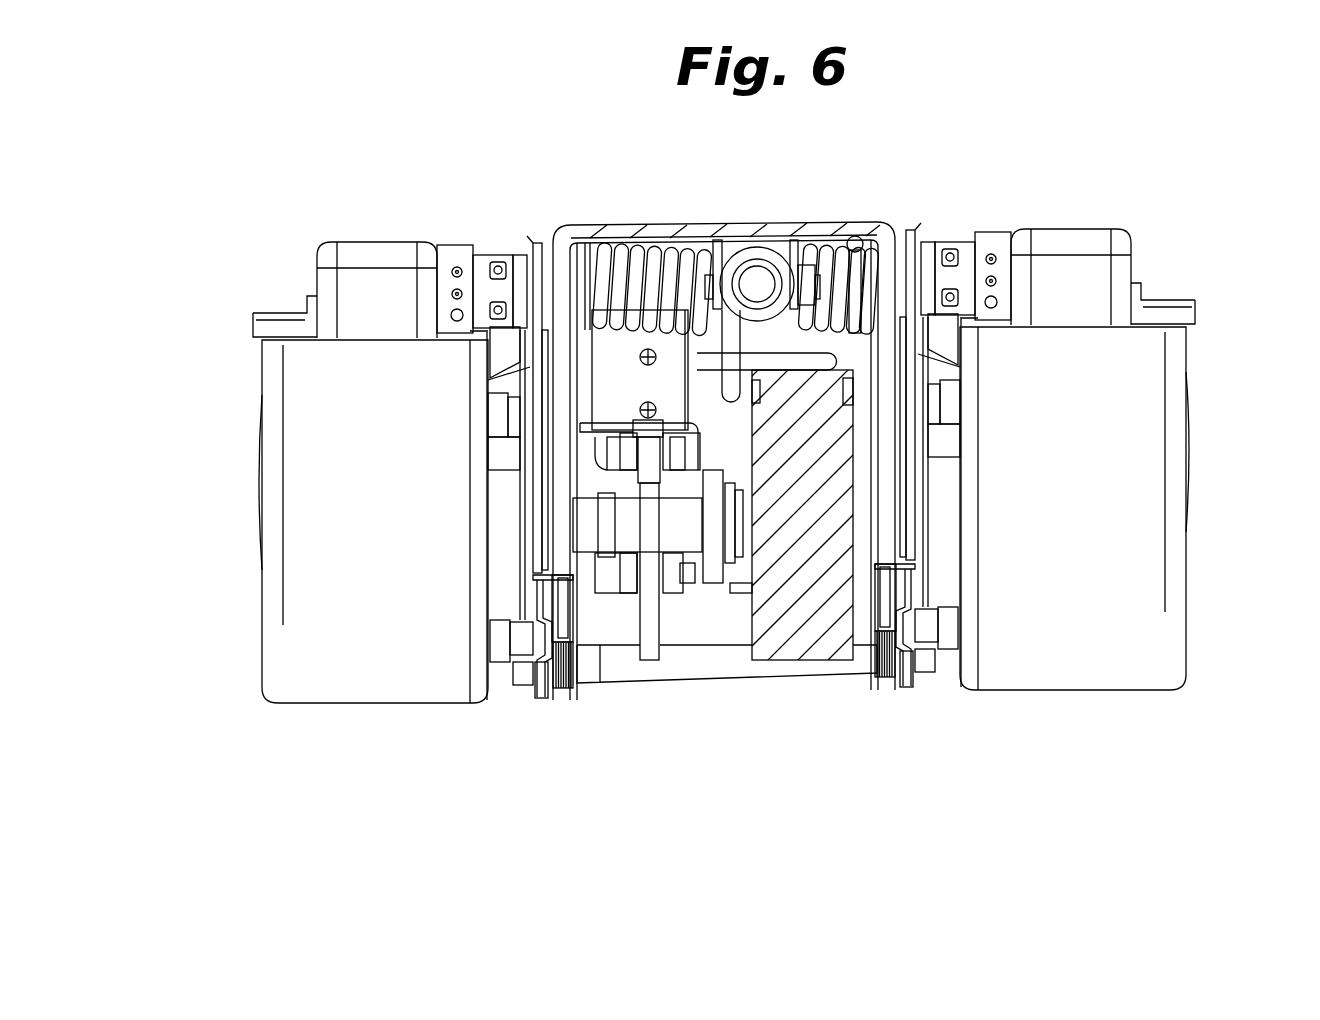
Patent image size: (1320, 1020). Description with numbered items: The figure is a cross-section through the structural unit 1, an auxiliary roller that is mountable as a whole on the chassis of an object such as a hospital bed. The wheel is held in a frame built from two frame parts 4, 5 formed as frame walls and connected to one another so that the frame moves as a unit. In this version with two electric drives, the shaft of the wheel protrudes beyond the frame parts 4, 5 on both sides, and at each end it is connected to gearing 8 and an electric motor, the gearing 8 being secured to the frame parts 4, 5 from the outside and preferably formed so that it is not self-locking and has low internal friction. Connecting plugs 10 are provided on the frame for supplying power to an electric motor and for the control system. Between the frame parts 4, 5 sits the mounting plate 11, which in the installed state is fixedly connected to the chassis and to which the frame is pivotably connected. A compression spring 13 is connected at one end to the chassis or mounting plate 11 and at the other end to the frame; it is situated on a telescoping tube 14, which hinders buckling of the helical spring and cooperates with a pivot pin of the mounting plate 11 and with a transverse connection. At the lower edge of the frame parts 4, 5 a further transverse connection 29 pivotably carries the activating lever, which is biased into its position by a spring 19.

The structural unit 1 is at (1080, 193).
The frame part 4 is at (535, 680).
The frame part 5 is at (908, 672).
The gearing 8 is at (320, 428).
The connecting plug 10 is at (447, 248).
The mounting plate 11 is at (645, 226).
The compression spring 13 is at (760, 255).
The telescoping tube 14 is at (825, 247).
The spring 19 is at (565, 690).
The transverse connection 29 is at (607, 672).